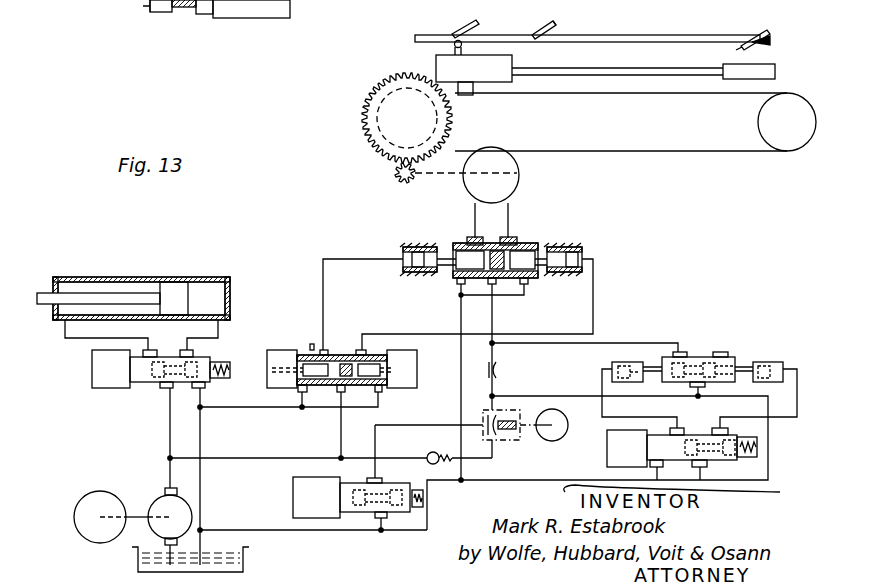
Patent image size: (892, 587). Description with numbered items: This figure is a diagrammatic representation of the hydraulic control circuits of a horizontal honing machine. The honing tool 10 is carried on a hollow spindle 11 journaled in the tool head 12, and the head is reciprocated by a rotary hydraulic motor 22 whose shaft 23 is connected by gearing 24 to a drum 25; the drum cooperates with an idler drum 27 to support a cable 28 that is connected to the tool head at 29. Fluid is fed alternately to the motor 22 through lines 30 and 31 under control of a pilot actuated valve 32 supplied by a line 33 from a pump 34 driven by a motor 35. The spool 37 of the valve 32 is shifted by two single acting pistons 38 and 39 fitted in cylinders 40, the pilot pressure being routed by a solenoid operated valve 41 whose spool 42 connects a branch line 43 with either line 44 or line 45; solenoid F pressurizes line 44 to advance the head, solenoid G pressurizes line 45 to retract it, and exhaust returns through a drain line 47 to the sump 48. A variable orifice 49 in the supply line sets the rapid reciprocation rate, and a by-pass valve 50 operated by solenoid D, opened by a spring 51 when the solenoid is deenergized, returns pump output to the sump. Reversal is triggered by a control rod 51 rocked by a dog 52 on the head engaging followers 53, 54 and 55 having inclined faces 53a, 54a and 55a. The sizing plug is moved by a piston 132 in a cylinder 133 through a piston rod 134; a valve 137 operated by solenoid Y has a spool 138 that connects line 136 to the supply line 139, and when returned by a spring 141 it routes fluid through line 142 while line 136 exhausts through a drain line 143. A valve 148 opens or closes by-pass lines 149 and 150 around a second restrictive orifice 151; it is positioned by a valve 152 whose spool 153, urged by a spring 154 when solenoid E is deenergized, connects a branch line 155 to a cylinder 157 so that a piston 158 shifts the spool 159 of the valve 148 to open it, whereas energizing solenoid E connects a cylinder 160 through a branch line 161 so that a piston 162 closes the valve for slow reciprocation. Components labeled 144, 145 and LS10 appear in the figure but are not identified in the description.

The honing tool 10 is at (787, 76).
The hollow spindle 11 is at (647, 66).
The tool head 12 is at (512, 82).
The rotary hydraulic motor 22 is at (519, 175).
The motor shaft 23 is at (444, 178).
The gearing 24 is at (393, 172).
The drum 25 is at (378, 132).
The idler drum 27 is at (779, 145).
The cable 28 is at (644, 96).
The cable connection 29 is at (472, 96).
The line 30 is at (510, 212).
The line 31 is at (474, 216).
The pilot actuated valve 32 is at (507, 245).
The supply line 33 is at (493, 309).
The pump 34 is at (160, 495).
The motor 35 is at (95, 497).
The spool 37 is at (470, 252).
The single acting piston 38 is at (572, 250).
The single acting piston 39 is at (420, 248).
The cylinders 40 is at (408, 268).
The solenoid operated valve 41 is at (312, 348).
The spool 42 is at (352, 352).
The branch line 43 is at (338, 428).
The line 44 is at (429, 333).
The line 45 is at (322, 294).
The drain line 47 is at (457, 302).
The sump 48 is at (243, 556).
The variable orifice 49 is at (500, 436).
The by-pass valve 50 is at (345, 518).
The spring / control rod 51 is at (690, 33).
The dog 52 is at (453, 48).
The forward follower 53 is at (772, 44).
The inclined face 53a is at (742, 33).
The intermediate follower 54 is at (556, 20).
The oppositely inclined face 54a is at (557, 27).
The rear follower 55 is at (460, 22).
The inclined face 55a is at (478, 26).
The piston 132 is at (178, 284).
The cylinder 133 is at (113, 277).
The piston rod 134 is at (80, 296).
The line 136 is at (66, 339).
The valve 137 is at (135, 389).
The spool 138 is at (156, 393).
The fluid supply line 139 is at (169, 430).
The spring 141 is at (231, 360).
The line 142 is at (222, 325).
The drain line 143 is at (203, 432).
The spring 144 is at (190, 8).
The plunger 145 is at (165, 14).
The valve 148 is at (719, 355).
The by-pass line 149 is at (586, 396).
The by-pass line 150 is at (576, 345).
The second restrictive orifice 151 is at (499, 371).
The valve 152 is at (745, 432).
The spool 153 is at (665, 462).
The spring 154 is at (760, 452).
The branch line 155 is at (798, 412).
The cylinder 157 is at (765, 364).
The piston 158 is at (782, 357).
The spool 159 is at (697, 360).
The cylinder 160 is at (633, 348).
The branch line 161 is at (597, 413).
The piston 162 is at (645, 336).
The limit switch LS10 is at (266, 18).
The solenoid Y is at (92, 379).
The solenoid G is at (271, 352).
The solenoid F is at (418, 364).
The solenoid D is at (293, 497).
The solenoid E is at (607, 458).